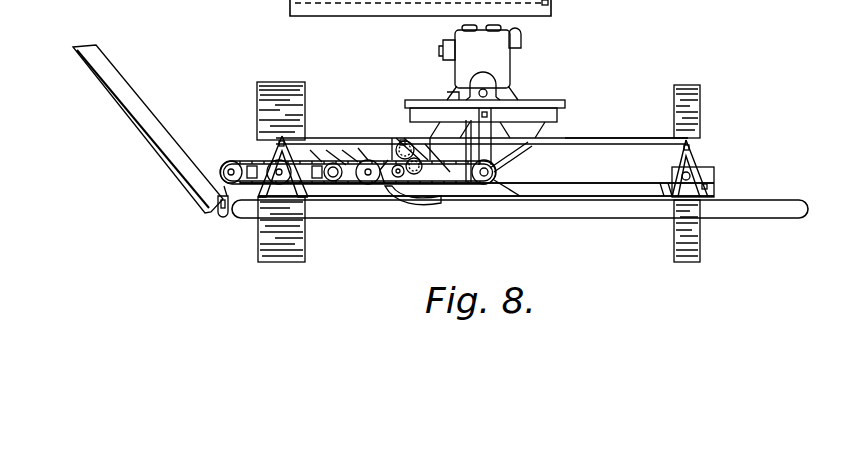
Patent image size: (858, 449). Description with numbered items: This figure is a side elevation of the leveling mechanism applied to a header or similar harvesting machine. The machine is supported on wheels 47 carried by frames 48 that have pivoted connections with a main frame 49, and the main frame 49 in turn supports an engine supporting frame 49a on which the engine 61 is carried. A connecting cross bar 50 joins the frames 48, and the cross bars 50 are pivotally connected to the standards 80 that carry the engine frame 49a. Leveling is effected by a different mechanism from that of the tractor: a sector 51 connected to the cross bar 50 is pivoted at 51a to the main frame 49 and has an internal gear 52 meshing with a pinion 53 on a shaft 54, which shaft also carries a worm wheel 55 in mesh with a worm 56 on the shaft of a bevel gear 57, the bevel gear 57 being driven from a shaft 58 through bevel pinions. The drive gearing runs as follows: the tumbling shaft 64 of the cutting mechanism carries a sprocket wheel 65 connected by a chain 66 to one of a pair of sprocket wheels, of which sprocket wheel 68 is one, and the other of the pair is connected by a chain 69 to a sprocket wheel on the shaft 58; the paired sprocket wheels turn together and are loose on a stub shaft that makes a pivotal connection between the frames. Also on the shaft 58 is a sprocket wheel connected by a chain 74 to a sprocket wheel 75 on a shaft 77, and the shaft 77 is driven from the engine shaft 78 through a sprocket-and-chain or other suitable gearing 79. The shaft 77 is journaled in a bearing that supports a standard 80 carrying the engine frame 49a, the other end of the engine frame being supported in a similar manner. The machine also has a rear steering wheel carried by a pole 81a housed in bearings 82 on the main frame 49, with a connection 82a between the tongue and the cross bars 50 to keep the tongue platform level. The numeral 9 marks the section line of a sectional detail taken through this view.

The motor 9 is at (478, 122).
The wheels 47 is at (301, 84).
The frames 48 is at (711, 168).
The main frame 49 is at (591, 183).
The engine supporting frame 49a is at (533, 108).
The cross bar 50 is at (579, 139).
The sector 51 is at (522, 131).
The pivot 51a is at (425, 186).
The internal gear 52 is at (450, 131).
The pinion 53 is at (411, 141).
The shaft 54 is at (398, 203).
The worm wheel 55 is at (358, 172).
The worm 56 is at (399, 152).
The bevel gear 57 is at (362, 165).
The shaft 58 is at (337, 180).
The engine 61 is at (522, 43).
The tumbling shaft 64 is at (222, 218).
The sprocket wheel 65 is at (226, 160).
The chain 66 is at (241, 162).
The sprocket wheel 68 is at (280, 185).
The chain 69 is at (325, 160).
The chain 74 is at (456, 184).
The sprocket wheel 75 is at (493, 181).
The shaft 77 is at (497, 173).
The engine shaft 78 is at (493, 92).
The gearing 79 is at (452, 92).
The standard 80 is at (487, 120).
The pole 81a is at (332, 182).
The bearings 82 is at (350, 170).
The connection 82a is at (332, 166).